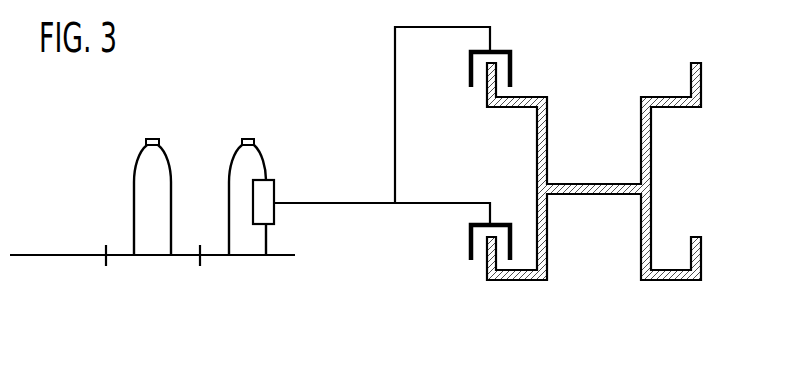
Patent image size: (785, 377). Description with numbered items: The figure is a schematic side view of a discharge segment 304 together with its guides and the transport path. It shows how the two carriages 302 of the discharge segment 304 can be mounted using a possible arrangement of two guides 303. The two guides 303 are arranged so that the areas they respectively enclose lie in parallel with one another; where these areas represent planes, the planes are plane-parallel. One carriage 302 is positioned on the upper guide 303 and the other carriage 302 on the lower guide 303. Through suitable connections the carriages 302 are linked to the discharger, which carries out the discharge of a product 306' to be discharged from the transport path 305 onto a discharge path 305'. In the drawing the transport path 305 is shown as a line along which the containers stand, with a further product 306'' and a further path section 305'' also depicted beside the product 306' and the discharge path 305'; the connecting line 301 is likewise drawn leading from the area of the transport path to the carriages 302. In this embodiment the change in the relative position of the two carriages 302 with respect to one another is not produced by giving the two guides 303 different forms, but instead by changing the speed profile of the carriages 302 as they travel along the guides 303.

The electrical connection line 301 is at (340, 205).
The carriage 302 is at (469, 61).
The guide 303 is at (527, 97).
The discharge segment 304 is at (533, 192).
The transport path 305 is at (247, 283).
The discharge path 305' is at (153, 278).
The conveyor section 305'' is at (58, 278).
The product to be discharged 306' is at (239, 176).
The container 306'' is at (139, 176).